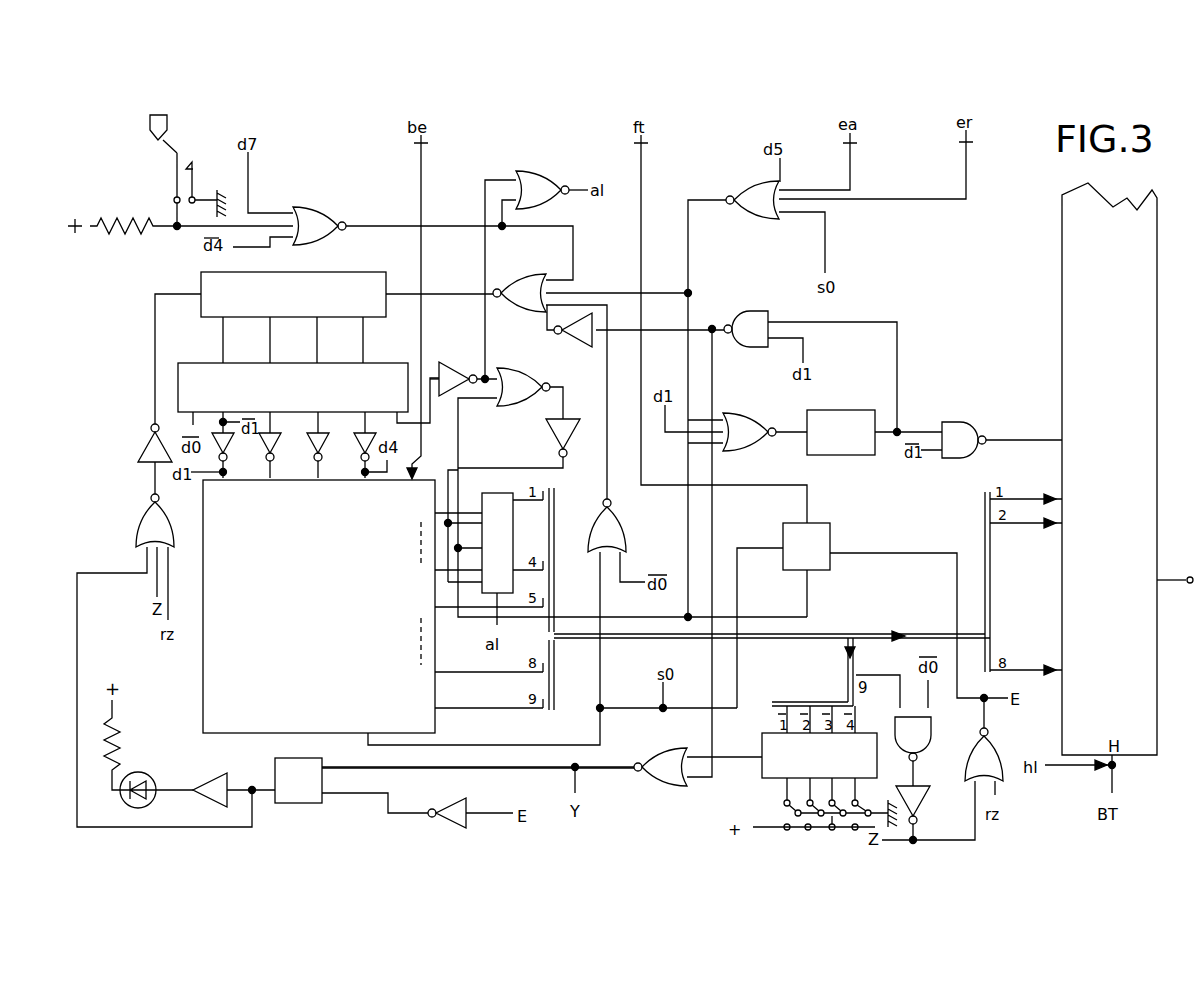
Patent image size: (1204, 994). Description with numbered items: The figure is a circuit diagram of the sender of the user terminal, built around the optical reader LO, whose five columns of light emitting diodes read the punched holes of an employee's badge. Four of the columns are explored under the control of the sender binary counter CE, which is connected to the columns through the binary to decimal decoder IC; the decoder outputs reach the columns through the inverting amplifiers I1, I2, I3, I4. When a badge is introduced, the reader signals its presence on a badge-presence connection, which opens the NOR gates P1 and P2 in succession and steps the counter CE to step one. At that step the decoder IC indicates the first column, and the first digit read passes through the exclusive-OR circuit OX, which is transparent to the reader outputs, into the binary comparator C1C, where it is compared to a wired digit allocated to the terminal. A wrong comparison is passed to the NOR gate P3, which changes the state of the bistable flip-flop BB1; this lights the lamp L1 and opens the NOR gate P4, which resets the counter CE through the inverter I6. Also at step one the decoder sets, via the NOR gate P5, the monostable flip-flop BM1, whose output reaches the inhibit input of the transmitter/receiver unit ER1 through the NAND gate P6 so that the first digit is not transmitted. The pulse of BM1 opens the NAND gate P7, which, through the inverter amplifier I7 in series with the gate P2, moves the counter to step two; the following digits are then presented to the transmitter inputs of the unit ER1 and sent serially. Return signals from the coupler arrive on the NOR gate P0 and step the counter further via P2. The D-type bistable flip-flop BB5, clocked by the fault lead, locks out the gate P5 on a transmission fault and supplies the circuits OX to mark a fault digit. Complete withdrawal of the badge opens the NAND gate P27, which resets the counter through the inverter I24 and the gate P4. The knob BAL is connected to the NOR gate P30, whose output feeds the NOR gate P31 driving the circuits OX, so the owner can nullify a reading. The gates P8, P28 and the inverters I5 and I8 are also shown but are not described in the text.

The knob for inhibiting reading BAL is at (152, 168).
The NOR gate P30 is at (318, 210).
The NOR gate P31 is at (532, 175).
The NOR gate P2 is at (520, 282).
The NOR gate P8 is at (520, 372).
The inverter I5 is at (448, 362).
The inverter amplifier I7 is at (575, 345).
The inverter I8 is at (572, 445).
The inverter I6 is at (145, 456).
The NOR gate P4 is at (137, 519).
The sender binary counter CE is at (328, 278).
The binary to decimal decoder IC is at (140, 383).
The inverting amplifier I1 is at (228, 450).
The inverting amplifier I2 is at (276, 450).
The inverting amplifier I3 is at (322, 450).
The inverting amplifier I4 is at (358, 436).
The optical reader LO is at (319, 607).
The exclusive-OR circuit OX is at (506, 548).
The NOR gate P1 is at (624, 535).
The NOR gate P0 is at (746, 186).
The NAND gate P7 is at (752, 313).
The NOR gate P5 is at (742, 420).
The monostable flip-flop BM1 is at (830, 411).
The NAND gate P6 is at (966, 426).
The D-type bistable flip-flop BB5 is at (812, 524).
The NOR gate P3 is at (660, 756).
The binary comparator C1C is at (765, 770).
The NAND gate P27 is at (930, 746).
The inverter I24 is at (928, 806).
The NOR gate P28 is at (1000, 752).
The transmitter/receiver unit ER1 is at (1073, 239).
The lamp L1 is at (148, 773).
The bistable flip-flop BB1 is at (282, 801).